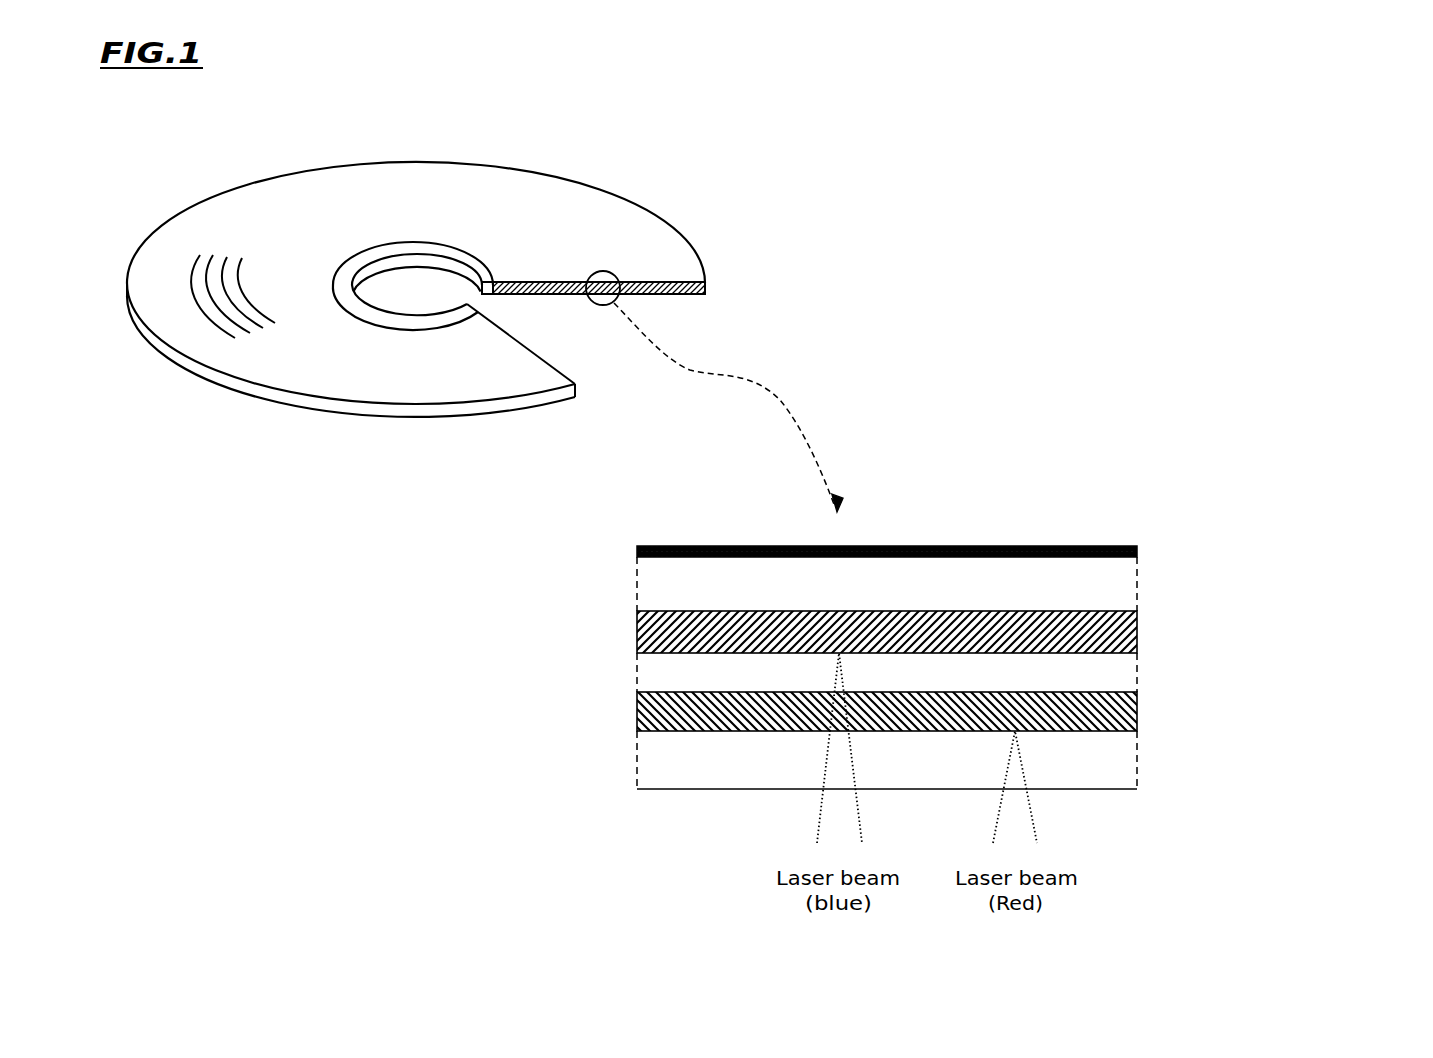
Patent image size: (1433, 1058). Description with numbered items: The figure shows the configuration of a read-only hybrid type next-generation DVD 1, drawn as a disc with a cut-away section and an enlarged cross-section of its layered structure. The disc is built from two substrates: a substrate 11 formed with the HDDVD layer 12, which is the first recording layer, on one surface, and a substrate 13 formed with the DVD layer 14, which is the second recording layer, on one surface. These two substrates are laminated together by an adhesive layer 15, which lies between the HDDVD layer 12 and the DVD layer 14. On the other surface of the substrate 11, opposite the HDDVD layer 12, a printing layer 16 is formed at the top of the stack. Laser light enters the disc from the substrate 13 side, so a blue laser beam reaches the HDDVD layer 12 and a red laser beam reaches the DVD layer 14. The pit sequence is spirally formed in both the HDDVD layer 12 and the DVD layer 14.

The hybrid type next-generation DVD 1 is at (609, 228).
The substrate 11 is at (1150, 582).
The HDDVD layer 12 is at (630, 623).
The substrate 13 is at (1150, 750).
The DVD layer 14 is at (630, 708).
The adhesive layer 15 is at (1150, 665).
The printing layer 16 is at (1033, 510).